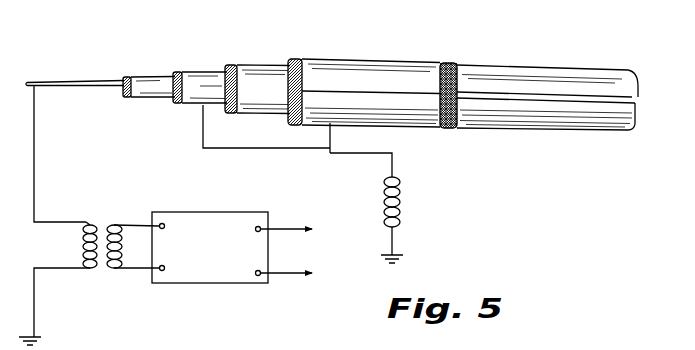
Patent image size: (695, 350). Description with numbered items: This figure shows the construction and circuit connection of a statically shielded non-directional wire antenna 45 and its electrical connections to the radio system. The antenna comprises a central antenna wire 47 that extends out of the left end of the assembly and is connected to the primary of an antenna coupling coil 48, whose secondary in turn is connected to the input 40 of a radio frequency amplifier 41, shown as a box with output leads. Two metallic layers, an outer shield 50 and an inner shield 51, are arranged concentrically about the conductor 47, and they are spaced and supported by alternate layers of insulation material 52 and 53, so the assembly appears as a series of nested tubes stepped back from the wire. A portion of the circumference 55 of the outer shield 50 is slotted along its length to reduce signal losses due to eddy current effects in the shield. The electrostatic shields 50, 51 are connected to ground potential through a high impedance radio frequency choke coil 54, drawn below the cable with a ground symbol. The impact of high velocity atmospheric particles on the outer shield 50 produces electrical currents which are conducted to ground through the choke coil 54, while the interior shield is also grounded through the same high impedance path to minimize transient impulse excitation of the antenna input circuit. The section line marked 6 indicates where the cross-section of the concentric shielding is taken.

The input 40 is at (165, 249).
The radio frequency amplifier 41 is at (213, 218).
The statically shielded wire antenna 45 is at (353, 62).
The central antenna wire 47 is at (50, 83).
The antenna coupling coil 48 is at (103, 228).
The outer shield 50 is at (483, 128).
The inner shield 51 is at (195, 103).
The layer of insulation material 52 is at (255, 65).
The layer of insulation material 53 is at (148, 98).
The radio frequency choke coil 54 is at (373, 210).
The slotted portion of the circumference 55 is at (586, 97).
The section line 6- 6 is at (512, 35).